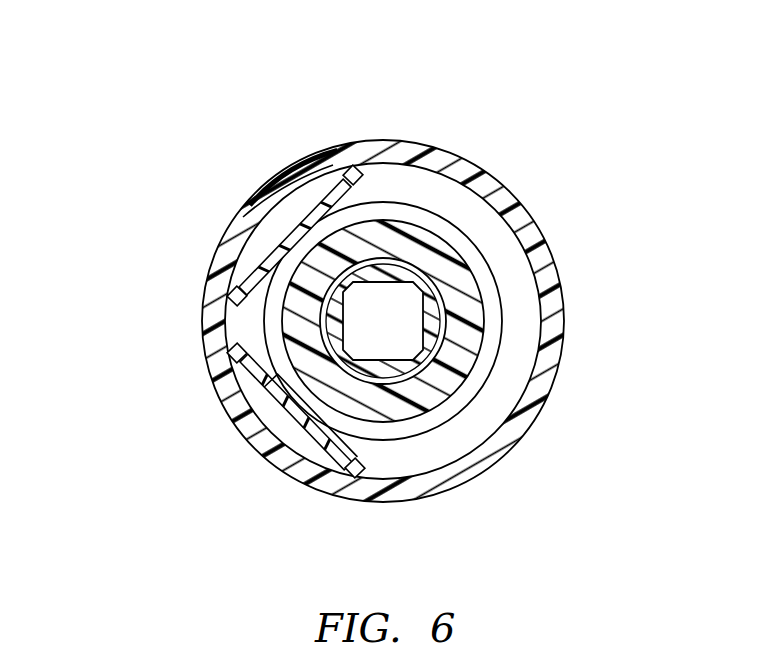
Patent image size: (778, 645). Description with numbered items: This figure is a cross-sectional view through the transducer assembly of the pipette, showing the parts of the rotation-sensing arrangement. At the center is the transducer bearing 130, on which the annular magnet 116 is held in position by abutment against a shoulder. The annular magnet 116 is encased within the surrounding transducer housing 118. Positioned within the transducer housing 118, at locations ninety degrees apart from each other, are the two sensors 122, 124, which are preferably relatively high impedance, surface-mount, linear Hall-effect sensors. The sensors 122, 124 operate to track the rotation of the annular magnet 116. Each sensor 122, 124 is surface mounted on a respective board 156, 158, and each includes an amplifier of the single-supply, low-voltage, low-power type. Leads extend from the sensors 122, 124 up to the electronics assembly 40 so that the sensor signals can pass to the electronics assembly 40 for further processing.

The electronics assembly 40 is at (166, 353).
The annular magnet 116 is at (478, 373).
The transducer housing 118 is at (522, 225).
The sensor 122 is at (277, 240).
The sensor 124 is at (263, 457).
The transducer bearing 130 is at (430, 282).
The board 156 is at (318, 198).
The board 158 is at (255, 392).